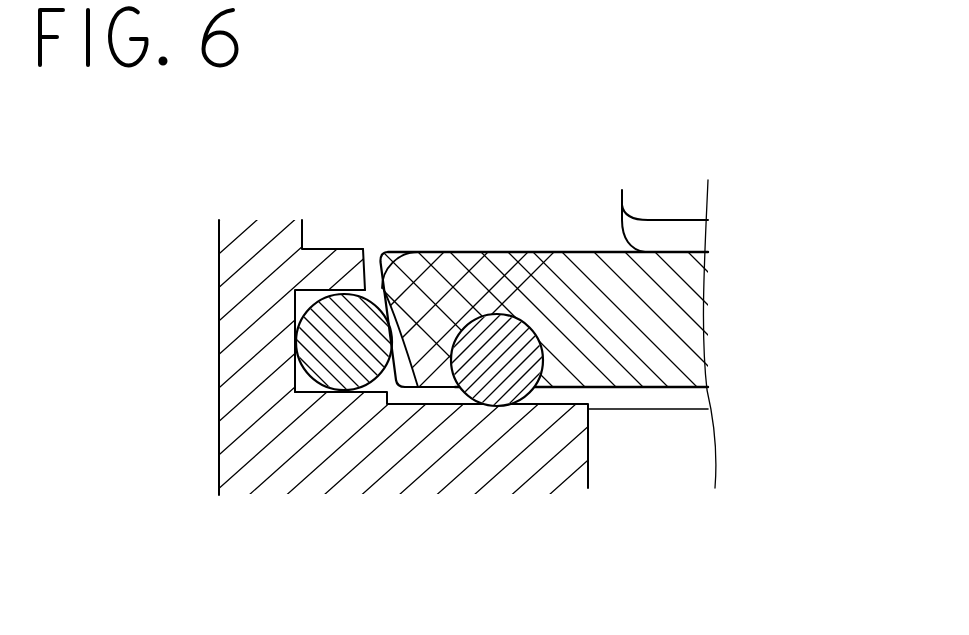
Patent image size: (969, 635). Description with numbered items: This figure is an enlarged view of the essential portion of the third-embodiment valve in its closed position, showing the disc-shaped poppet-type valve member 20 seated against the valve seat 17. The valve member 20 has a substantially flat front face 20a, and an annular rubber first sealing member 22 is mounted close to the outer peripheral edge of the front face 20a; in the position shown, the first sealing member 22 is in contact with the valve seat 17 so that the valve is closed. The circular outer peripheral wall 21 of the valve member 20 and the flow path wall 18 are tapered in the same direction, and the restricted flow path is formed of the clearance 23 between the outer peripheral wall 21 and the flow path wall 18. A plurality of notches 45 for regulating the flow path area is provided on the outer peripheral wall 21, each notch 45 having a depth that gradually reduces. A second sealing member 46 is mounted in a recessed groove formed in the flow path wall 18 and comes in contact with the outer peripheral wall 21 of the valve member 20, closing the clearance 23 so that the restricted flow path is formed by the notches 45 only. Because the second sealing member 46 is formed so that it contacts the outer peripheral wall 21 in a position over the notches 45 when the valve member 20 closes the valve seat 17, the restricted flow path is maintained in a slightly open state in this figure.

The valve seat 17 is at (496, 398).
The flow path wall 18 is at (363, 277).
The valve member 20 is at (672, 268).
The front face 20a is at (677, 392).
The outer peripheral wall 21 is at (402, 362).
The first sealing member 22 is at (517, 322).
The clearance 23 is at (372, 268).
The notches 45 is at (474, 278).
The second sealing member 46 is at (330, 342).